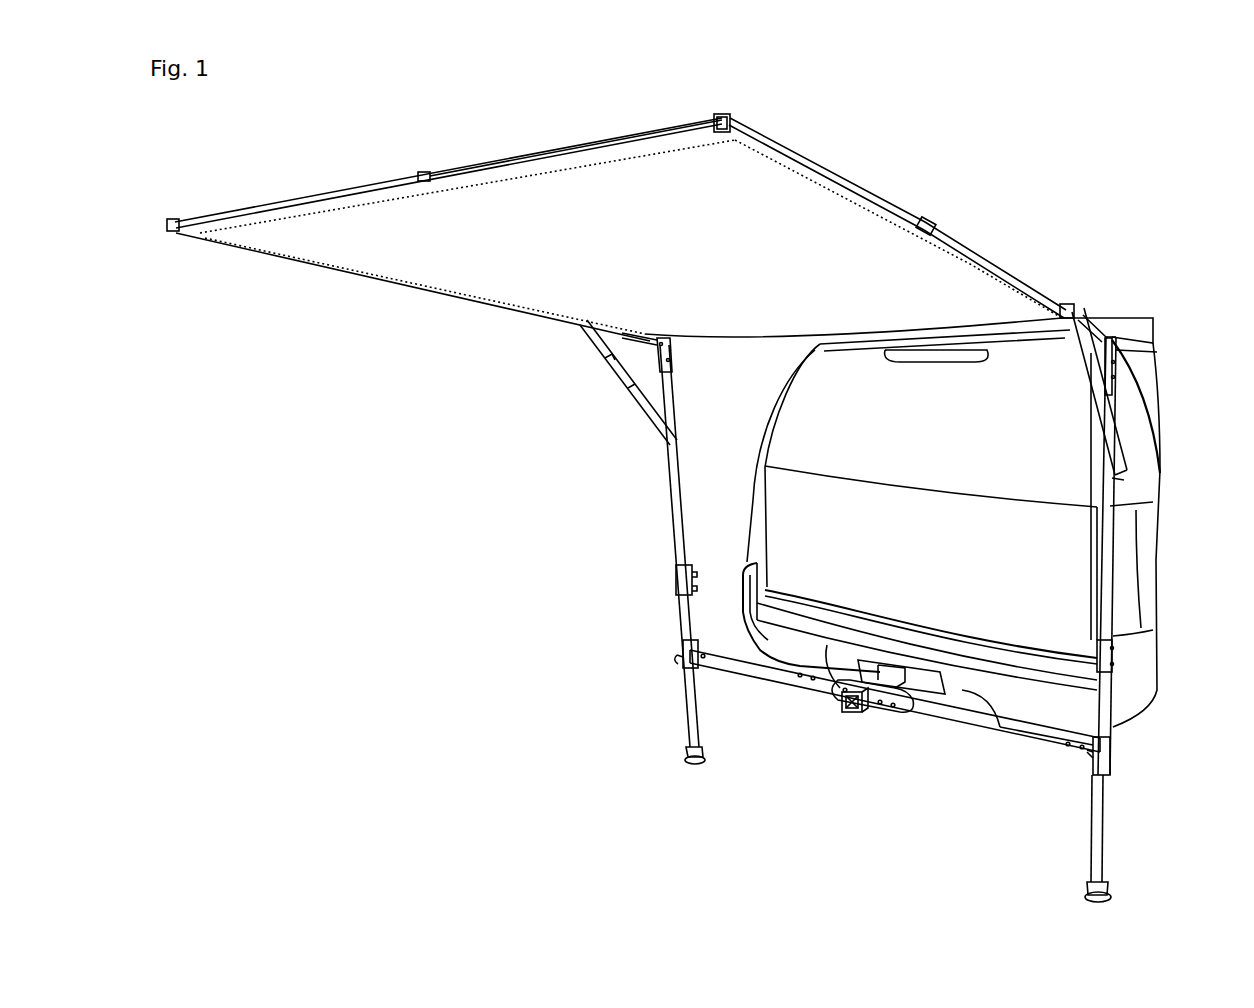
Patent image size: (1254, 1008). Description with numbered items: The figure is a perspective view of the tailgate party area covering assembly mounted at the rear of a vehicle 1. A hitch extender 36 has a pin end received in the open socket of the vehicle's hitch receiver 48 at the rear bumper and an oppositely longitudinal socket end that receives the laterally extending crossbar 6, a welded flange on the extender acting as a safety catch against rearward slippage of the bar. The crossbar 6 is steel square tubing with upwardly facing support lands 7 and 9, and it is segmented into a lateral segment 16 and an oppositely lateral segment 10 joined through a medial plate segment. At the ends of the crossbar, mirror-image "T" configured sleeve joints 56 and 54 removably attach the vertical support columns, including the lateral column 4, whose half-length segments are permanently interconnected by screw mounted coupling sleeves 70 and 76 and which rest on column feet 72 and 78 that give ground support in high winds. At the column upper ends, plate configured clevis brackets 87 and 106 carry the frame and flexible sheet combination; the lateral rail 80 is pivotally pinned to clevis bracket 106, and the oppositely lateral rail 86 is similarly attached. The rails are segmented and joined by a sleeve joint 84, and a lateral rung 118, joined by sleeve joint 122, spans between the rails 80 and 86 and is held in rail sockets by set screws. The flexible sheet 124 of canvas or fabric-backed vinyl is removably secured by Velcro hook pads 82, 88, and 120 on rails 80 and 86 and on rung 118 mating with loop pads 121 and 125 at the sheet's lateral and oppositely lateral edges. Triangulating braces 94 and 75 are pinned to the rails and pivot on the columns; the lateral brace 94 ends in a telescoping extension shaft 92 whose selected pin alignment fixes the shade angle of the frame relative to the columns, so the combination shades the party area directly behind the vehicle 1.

The vehicle 1 is at (785, 540).
The lateral vertical support column 4 is at (1117, 577).
The crossbar 6 is at (895, 704).
The support land 7 is at (732, 650).
The support land 9 is at (985, 712).
The oppositely lateral crossbar segment 10 is at (790, 680).
The lateral crossbar segment 16 is at (1037, 740).
The hitch extender 36 is at (845, 718).
The hitch receiver 48 is at (912, 706).
The "T" configured sleeve joint 54 is at (1112, 760).
The "T" configured sleeve joint 56 is at (688, 652).
The screw mounted coupling sleeve 70 is at (1112, 664).
The column foot 72 is at (1106, 893).
The oppositely lateral triangulating brace 75 is at (630, 397).
The screw mounted coupling sleeve 76 is at (680, 580).
The column foot 78 is at (690, 754).
The lateral rail 80 is at (716, 118).
The Velcro hook pad 82 is at (1075, 311).
The sleeve joint 84 is at (930, 226).
The oppositely lateral rail 86 is at (172, 228).
The clevis bracket 87 is at (670, 350).
The Velcro hook pad 88 is at (622, 340).
The telescoping extension shaft 92 is at (1124, 481).
The lateral triangulating brace 94 is at (1112, 419).
The clevis bracket 106 is at (1150, 352).
The lateral rung 118 is at (313, 198).
The Velcro hook pad 120 is at (532, 150).
The Velcro loop pad 121 is at (843, 188).
The sleeve joint 122 is at (424, 172).
The flexible sheet 124 is at (745, 178).
The Velcro loop pad 125 is at (391, 283).